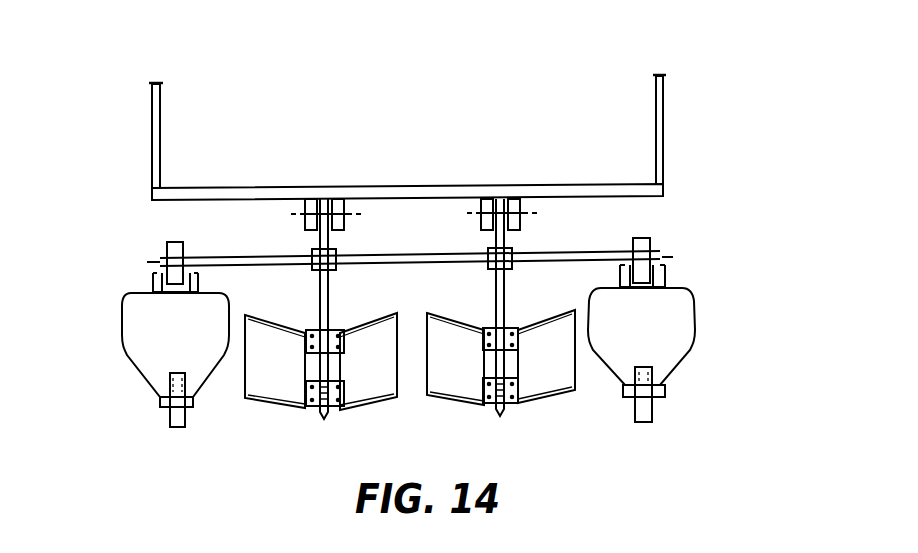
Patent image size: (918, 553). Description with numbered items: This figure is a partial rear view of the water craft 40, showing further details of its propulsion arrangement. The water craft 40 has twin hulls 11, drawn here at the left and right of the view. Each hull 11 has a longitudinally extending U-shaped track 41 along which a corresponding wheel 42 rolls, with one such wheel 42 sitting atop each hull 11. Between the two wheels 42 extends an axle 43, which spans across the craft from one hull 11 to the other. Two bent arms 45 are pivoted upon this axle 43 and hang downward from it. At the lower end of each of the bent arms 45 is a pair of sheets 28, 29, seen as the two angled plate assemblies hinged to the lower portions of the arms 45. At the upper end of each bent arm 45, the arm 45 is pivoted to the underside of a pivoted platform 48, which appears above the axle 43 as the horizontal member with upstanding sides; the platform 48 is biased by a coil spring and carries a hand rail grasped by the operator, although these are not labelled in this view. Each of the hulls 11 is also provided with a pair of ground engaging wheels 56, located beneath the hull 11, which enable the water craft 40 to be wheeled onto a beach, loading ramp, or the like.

The water craft 40 is at (738, 52).
The pivoted platform 48 is at (421, 188).
The axle 43 is at (554, 253).
The bent arms 45 is at (330, 288).
The sheet 28 is at (277, 381).
The sheet 29 is at (545, 384).
The hulls 11 is at (136, 339).
The wheel 42 is at (643, 237).
The U-shaped track 41 is at (664, 286).
The ground engaging wheels 56 is at (650, 423).